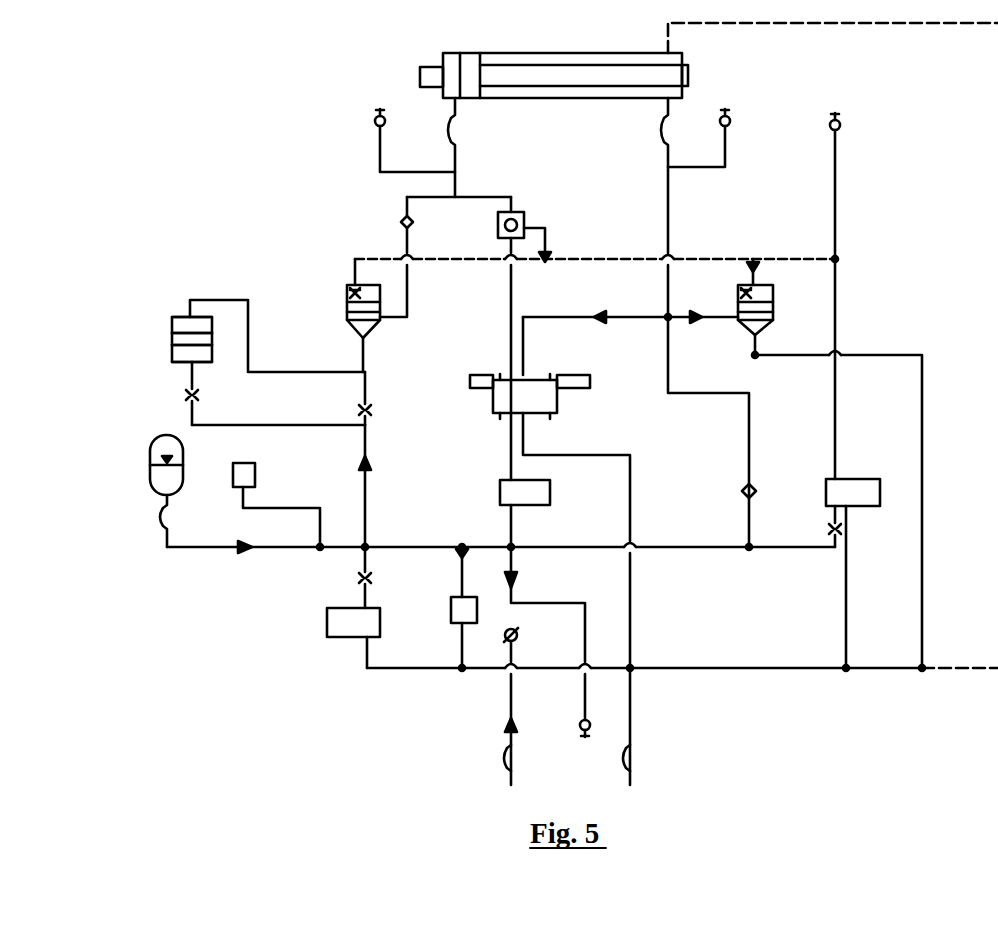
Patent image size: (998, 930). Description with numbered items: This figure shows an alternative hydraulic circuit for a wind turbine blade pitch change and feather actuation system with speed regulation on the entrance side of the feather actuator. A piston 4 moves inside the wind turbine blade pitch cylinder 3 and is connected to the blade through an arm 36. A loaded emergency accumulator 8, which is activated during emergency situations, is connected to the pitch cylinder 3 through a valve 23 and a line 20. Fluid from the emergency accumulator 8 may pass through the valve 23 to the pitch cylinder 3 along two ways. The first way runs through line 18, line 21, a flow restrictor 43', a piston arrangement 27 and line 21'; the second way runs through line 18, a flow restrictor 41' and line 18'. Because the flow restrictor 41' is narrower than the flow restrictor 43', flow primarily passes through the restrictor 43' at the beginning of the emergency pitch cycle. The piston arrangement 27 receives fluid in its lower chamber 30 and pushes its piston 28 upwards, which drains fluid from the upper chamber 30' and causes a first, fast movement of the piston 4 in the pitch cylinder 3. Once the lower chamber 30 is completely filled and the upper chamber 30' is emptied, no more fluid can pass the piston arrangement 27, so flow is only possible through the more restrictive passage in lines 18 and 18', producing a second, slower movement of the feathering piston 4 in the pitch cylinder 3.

The pitch cylinder 3 is at (453, 53).
The piston 4 is at (470, 77).
The arm 36 is at (686, 75).
The line 20 is at (460, 187).
The valve 23 is at (378, 325).
The piston arrangement 27 is at (175, 318).
The piston 28 is at (172, 337).
The lower chamber 30 is at (145, 372).
The upper chamber 30' is at (118, 307).
The line 21' is at (277, 315).
The line 21 is at (278, 408).
The flow restrictor 43' is at (113, 417).
The line 18' is at (390, 363).
The flow restrictor 41' is at (401, 414).
The line 18 is at (392, 486).
The emergency accumulator 8 is at (150, 487).